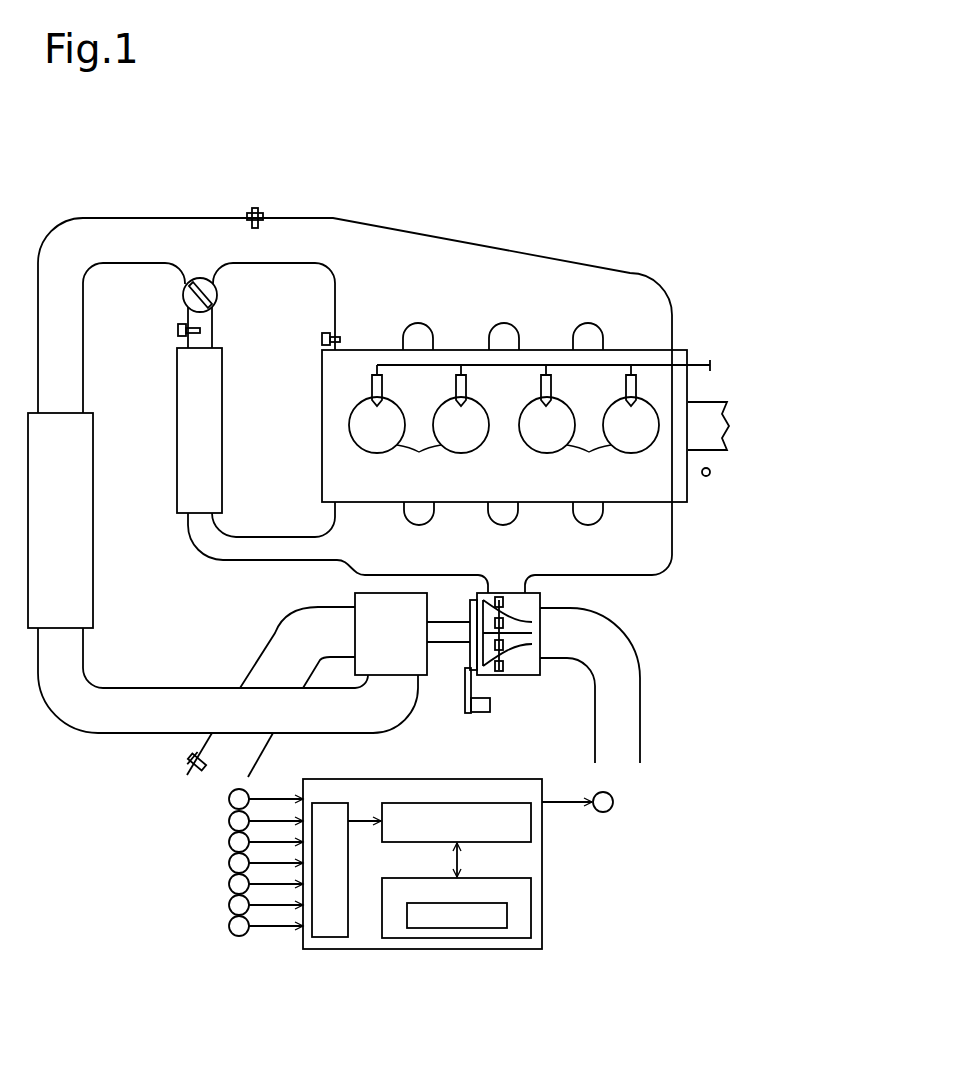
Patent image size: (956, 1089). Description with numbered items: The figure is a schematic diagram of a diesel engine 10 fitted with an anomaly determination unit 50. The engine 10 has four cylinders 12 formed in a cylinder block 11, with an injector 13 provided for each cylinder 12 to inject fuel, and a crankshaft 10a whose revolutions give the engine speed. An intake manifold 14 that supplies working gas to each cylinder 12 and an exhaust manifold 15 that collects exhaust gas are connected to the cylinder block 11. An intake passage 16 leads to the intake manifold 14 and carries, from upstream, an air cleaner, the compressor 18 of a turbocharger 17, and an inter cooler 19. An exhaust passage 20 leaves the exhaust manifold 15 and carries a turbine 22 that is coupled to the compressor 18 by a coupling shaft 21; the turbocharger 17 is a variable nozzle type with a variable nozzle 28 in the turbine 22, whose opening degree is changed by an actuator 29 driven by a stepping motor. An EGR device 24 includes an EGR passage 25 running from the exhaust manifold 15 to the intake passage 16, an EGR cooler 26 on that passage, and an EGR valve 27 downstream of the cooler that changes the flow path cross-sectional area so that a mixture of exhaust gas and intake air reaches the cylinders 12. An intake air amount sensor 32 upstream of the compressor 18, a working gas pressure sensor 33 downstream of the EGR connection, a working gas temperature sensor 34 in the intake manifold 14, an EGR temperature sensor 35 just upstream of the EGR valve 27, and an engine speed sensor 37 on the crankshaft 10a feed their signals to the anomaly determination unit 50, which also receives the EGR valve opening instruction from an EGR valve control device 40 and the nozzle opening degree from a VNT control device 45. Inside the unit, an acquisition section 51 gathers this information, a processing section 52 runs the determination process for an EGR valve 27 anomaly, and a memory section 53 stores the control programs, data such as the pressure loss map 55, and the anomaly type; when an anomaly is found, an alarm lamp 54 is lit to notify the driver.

The diesel engine 10 is at (677, 239).
The crankshaft 10a is at (735, 415).
The cylinder block 11 is at (320, 380).
The cylinders 12 is at (504, 439).
The injectors 13 is at (383, 384).
The intake manifold 14 is at (548, 258).
The exhaust manifold 15 is at (676, 528).
The intake passage 16 is at (252, 663).
The turbocharger 17 is at (349, 602).
The compressor 18 is at (428, 677).
The inter cooler 19 is at (93, 558).
The exhaust passage 20 is at (640, 645).
The coupling shaft 21 is at (447, 622).
The turbine 22 is at (545, 636).
The EGR device 24 is at (238, 496).
The EGR passage 25 is at (242, 562).
The EGR cooler 26 is at (222, 433).
The EGR valve 27 is at (218, 292).
The variable nozzle 28 is at (515, 672).
The actuator 29 is at (490, 706).
The intake air amount sensor 32 is at (183, 758).
The working gas pressure sensor 33 is at (259, 210).
The working gas temperature sensor 34 is at (320, 339).
The EGR temperature sensor 35 is at (176, 330).
The engine speed sensor 37 is at (711, 472).
The EGR valve control device 40 is at (229, 903).
The VNT control device 45 is at (229, 924).
The anomaly determination unit 50 is at (509, 779).
The acquisition section 51 is at (330, 803).
The processing section 52 is at (490, 803).
The memory section 53 is at (490, 878).
The alarm lamp 54 is at (614, 802).
The pressure loss map 55 is at (475, 903).